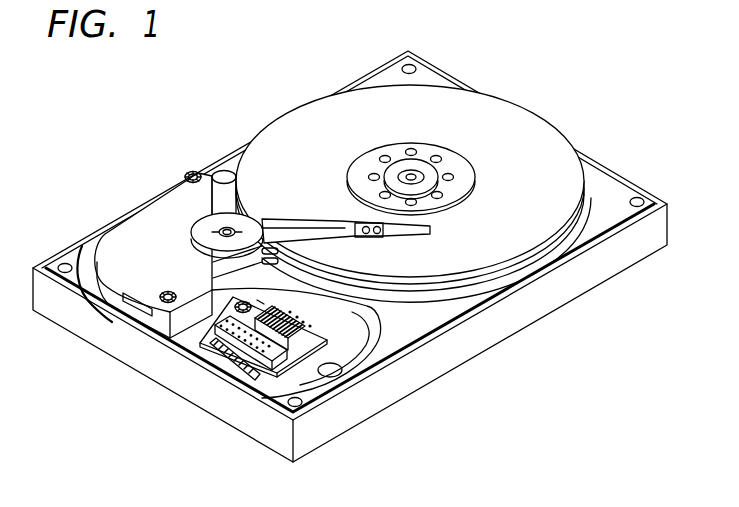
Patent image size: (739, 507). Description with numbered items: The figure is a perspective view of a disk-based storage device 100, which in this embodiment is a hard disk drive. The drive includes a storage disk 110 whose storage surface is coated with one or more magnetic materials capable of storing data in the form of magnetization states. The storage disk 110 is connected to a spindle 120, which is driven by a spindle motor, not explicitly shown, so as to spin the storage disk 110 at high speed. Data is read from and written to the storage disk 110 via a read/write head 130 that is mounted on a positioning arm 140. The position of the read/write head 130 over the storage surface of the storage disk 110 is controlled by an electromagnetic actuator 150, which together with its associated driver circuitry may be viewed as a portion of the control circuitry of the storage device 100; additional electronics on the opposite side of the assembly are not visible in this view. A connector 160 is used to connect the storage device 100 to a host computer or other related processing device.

The disk-based storage device 100 is at (148, 95).
The storage disk 110 is at (516, 118).
The spindle 120 is at (432, 172).
The read/write head 130 is at (407, 229).
The positioning arm 140 is at (282, 224).
The electromagnetic actuator 150 is at (133, 219).
The connector 160 is at (237, 348).